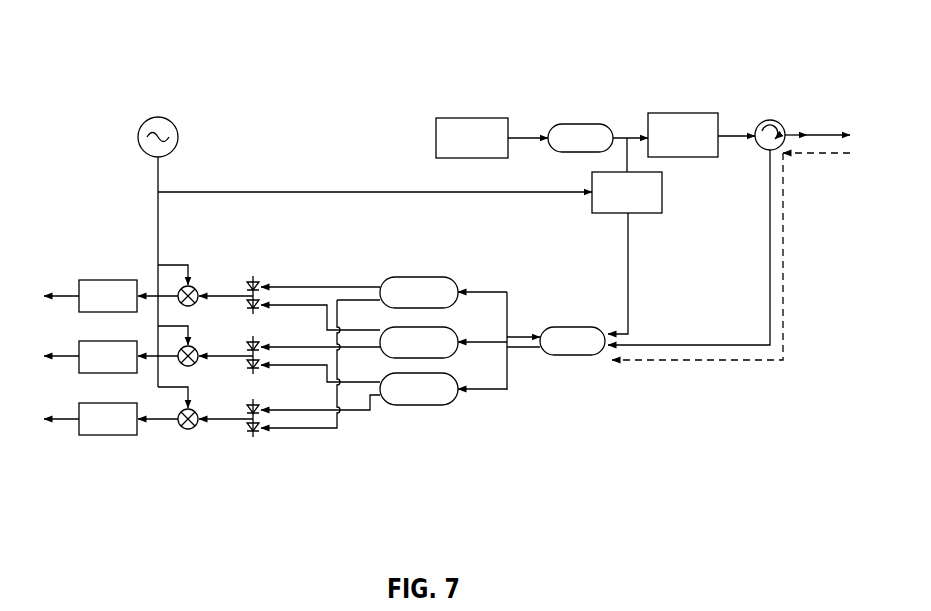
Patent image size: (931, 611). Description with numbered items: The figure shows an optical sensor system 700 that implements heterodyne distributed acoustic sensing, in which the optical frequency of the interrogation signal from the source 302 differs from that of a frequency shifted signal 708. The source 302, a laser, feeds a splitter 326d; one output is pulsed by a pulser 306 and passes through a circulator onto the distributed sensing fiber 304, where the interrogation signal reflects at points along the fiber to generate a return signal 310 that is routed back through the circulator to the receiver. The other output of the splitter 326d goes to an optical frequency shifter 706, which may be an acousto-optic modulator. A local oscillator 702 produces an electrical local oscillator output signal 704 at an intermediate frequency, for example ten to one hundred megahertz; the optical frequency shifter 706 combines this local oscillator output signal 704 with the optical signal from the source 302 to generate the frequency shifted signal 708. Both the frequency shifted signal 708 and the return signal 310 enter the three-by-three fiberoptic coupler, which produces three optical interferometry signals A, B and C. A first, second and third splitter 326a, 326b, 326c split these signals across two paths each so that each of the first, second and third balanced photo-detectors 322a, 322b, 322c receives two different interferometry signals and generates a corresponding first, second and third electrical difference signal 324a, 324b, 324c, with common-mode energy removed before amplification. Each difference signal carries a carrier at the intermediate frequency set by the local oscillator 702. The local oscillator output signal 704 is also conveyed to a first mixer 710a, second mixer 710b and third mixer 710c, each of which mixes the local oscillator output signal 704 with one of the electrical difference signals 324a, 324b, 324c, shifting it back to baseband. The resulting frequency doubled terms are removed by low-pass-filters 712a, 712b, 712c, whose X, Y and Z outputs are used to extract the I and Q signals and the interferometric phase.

The optical sensor system 700 is at (98, 58).
The local oscillator 702 is at (150, 119).
The local oscillator output signal 704 is at (158, 205).
The source 302 is at (473, 117).
The splitter 326d is at (580, 124).
The pulser 306 is at (683, 113).
The distributed sensing fiber 304 is at (730, 132).
The optical frequency shifter 706 is at (663, 190).
The frequency shifted signal 708 is at (628, 258).
The return signal 310 is at (707, 344).
The first splitter 326a is at (422, 277).
The second splitter 326b is at (383, 327).
The third splitter 326c is at (418, 406).
The first balanced photo-detector 322a is at (255, 280).
The second balanced photo-detector 322b is at (258, 374).
The third balanced photo-detector 322c is at (250, 436).
The first electrical difference signal 324a is at (233, 296).
The second electrical difference signal 324b is at (233, 356).
The third electrical difference signal 324c is at (233, 419).
The first mixer 710a is at (182, 288).
The second mixer 710b is at (186, 368).
The third mixer 710c is at (192, 431).
The low-pass-filter 712a is at (107, 280).
The low-pass-filter 712b is at (107, 341).
The low-pass-filter 712c is at (107, 436).